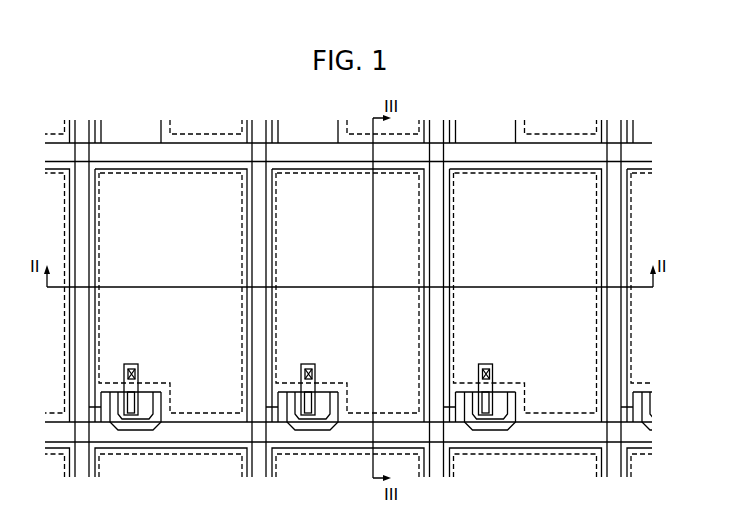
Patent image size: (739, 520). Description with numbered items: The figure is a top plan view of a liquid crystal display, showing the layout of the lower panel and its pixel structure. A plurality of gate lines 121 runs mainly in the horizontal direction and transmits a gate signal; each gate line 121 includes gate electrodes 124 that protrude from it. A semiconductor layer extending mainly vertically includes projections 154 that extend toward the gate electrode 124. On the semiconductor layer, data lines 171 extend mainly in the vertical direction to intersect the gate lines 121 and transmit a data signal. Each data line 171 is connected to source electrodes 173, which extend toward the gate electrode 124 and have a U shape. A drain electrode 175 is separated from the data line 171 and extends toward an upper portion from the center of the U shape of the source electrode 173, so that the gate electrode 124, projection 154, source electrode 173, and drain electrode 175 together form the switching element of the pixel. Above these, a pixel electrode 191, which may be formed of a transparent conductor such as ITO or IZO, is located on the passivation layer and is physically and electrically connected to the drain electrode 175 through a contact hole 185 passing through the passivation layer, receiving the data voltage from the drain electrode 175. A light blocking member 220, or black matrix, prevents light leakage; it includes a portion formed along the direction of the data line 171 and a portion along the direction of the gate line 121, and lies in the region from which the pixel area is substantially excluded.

The gate line 121 is at (222, 433).
The gate electrode 124 is at (149, 424).
The projection 154 is at (143, 397).
The data line 171 is at (76, 267).
The source electrode 173 is at (121, 432).
The drain electrode 175 is at (138, 368).
The contact hole 185 is at (130, 368).
The pixel electrode 191 is at (100, 220).
The light blocking member 220 is at (244, 217).